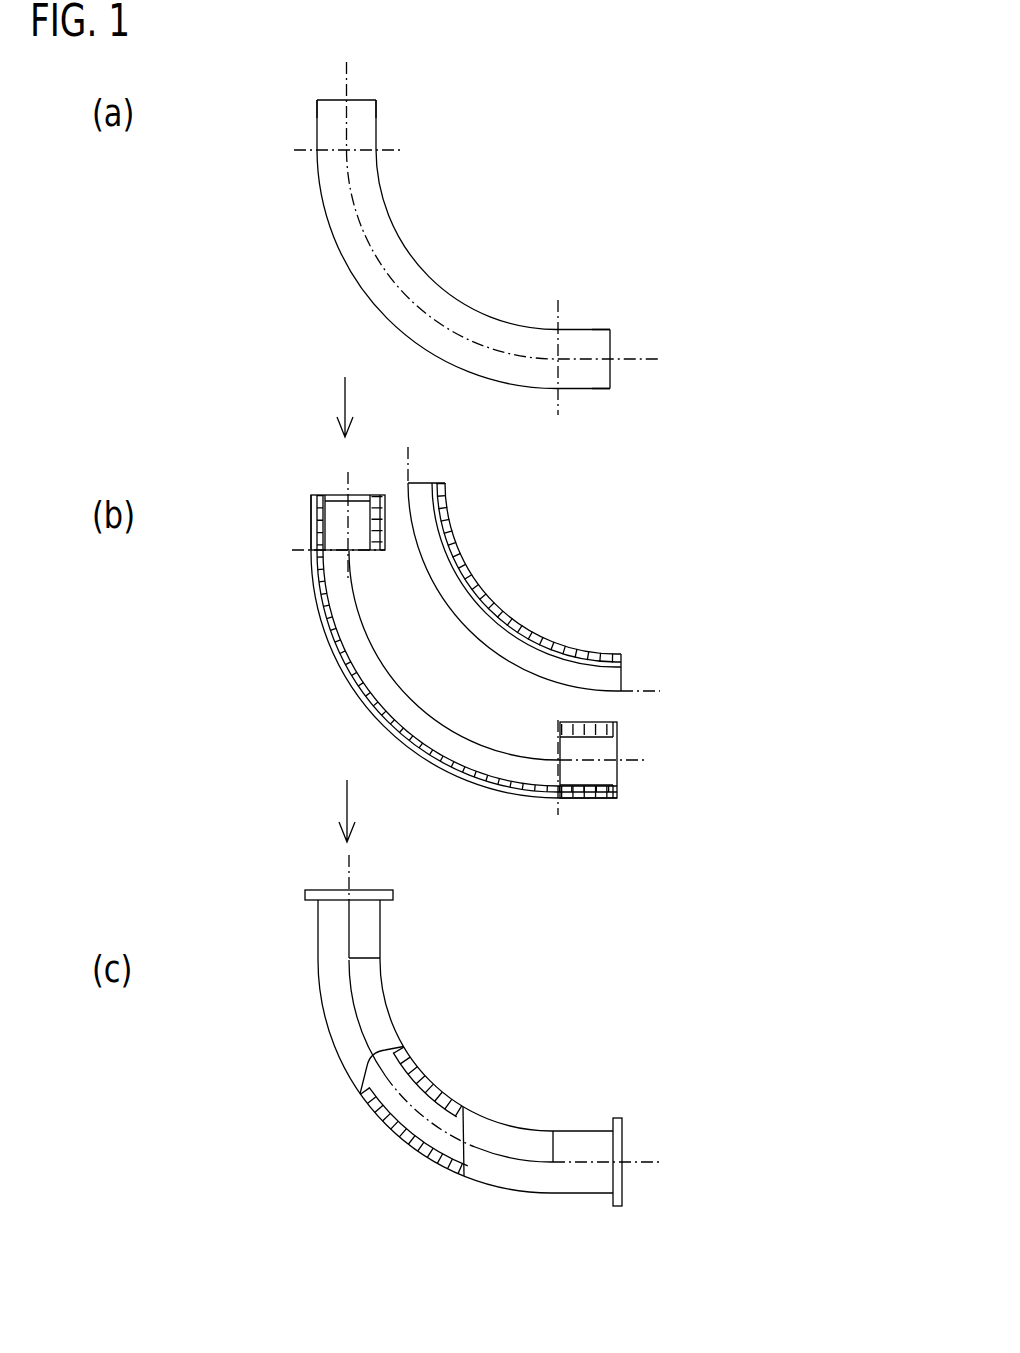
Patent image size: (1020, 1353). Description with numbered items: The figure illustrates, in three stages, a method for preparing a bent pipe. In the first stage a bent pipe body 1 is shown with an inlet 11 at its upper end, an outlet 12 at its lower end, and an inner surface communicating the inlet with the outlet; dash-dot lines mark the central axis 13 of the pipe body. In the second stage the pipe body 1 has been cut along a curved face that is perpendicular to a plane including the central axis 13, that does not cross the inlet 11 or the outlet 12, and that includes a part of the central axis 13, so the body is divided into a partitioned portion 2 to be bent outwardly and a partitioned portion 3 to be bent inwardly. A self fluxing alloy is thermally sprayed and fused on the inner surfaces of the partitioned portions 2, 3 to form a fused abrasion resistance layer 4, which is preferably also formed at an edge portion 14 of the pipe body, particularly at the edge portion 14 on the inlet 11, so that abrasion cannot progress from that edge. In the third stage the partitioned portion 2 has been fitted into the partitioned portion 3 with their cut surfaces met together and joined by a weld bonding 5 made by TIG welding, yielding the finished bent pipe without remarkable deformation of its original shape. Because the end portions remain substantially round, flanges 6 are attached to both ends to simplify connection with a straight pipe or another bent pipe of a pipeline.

The bent pipe body 1 is at (400, 258).
The inlet 11 is at (358, 100).
The outlet 12 is at (610, 338).
The central axis 13 is at (347, 73).
The partitioned portion to be bent outwardly 2 is at (317, 593).
The partitioned portion to be bent inwardly 3 is at (458, 557).
The fused abrasion resistance layer 4 is at (512, 623).
The edge portion 14 is at (310, 497).
The weld bonding 5 is at (360, 1013).
The flanges 6 is at (393, 893).